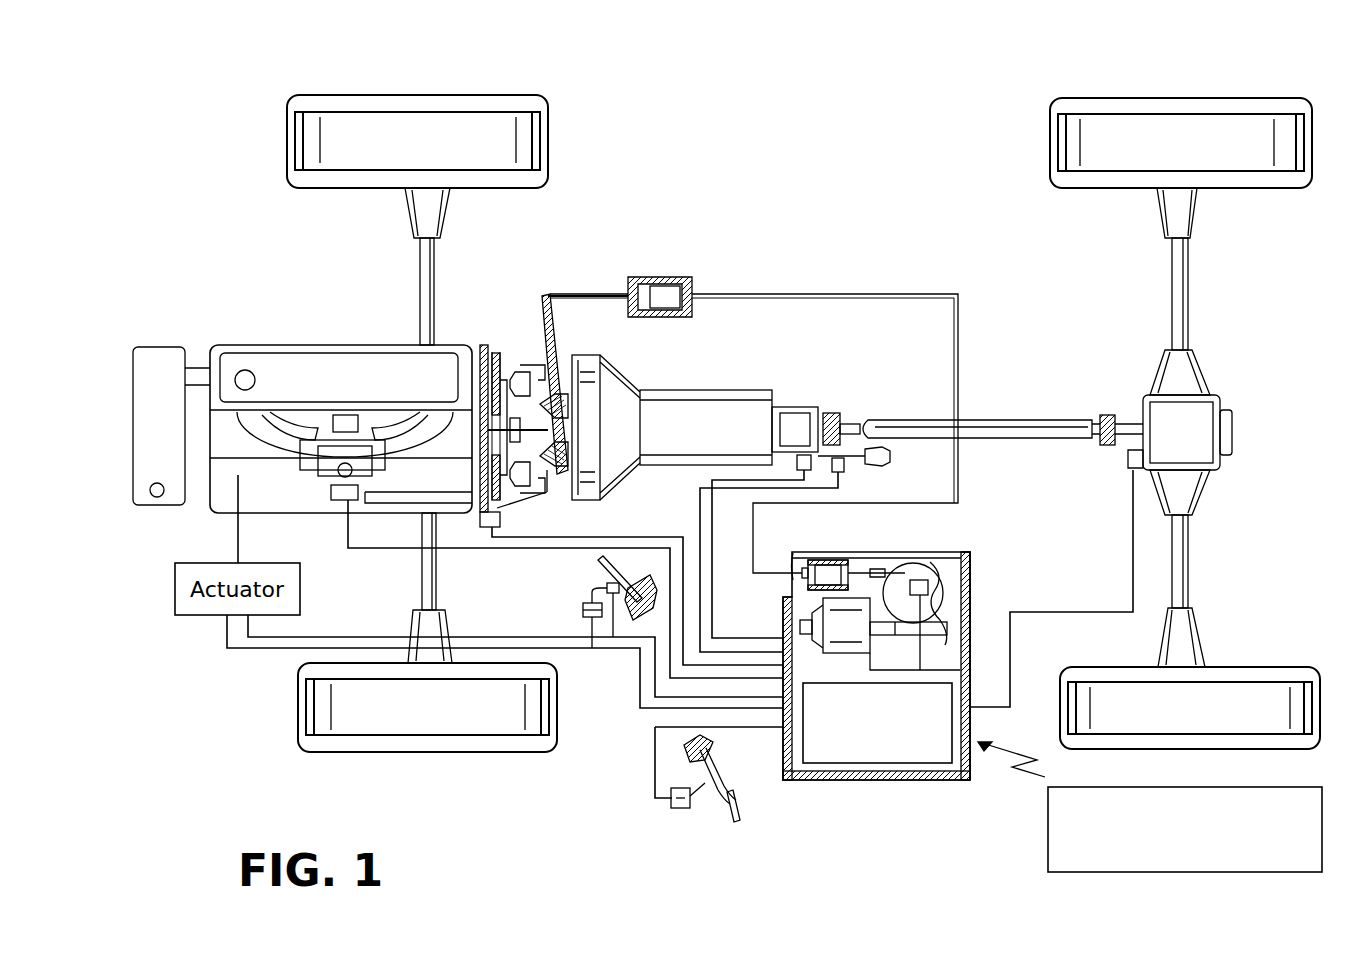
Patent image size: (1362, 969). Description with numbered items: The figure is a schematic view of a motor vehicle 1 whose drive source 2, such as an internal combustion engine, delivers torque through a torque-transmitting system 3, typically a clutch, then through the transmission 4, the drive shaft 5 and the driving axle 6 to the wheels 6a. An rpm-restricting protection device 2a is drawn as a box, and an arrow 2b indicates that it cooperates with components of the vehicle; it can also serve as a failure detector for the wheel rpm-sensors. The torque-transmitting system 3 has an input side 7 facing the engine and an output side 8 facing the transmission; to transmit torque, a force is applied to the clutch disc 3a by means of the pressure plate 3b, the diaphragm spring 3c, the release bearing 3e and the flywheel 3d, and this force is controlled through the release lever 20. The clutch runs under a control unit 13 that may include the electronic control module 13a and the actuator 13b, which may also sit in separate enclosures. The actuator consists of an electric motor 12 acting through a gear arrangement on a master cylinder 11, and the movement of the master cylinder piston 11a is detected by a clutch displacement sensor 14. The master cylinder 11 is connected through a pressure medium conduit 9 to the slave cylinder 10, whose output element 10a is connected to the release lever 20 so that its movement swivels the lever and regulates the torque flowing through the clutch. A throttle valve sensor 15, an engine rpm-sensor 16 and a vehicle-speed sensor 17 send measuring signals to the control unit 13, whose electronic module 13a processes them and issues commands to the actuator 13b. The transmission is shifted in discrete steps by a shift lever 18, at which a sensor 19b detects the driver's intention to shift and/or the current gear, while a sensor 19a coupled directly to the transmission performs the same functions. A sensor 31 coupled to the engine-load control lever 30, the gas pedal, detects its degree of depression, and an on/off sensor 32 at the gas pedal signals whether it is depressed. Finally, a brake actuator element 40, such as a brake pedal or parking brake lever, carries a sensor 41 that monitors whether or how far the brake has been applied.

The motor vehicle 1 is at (790, 228).
The drive source 2 is at (240, 355).
The rpm-restricting protection device 2a is at (1322, 832).
The arrow 2b is at (1020, 775).
The torque-transmitting system 3 is at (483, 300).
The clutch disc 3a is at (532, 492).
The pressure plate 3b is at (528, 365).
The diaphragm spring 3c is at (553, 395).
The flywheel 3d is at (505, 478).
The release bearing 3e is at (560, 434).
The transmission 4 is at (736, 390).
The drive shaft 5 is at (1018, 420).
The driving axle 6 is at (1190, 575).
The wheels 6a is at (1107, 188).
The input side 7 is at (478, 348).
The output side 8 is at (582, 356).
The pressure medium conduit 9 is at (858, 293).
The slave cylinder 10 is at (660, 278).
The output element 10a is at (580, 292).
The master cylinder 11 is at (806, 560).
The master cylinder piston 11a is at (834, 562).
The electric motor 12 is at (848, 637).
The control unit 13 is at (783, 752).
The electronic control module 13a is at (850, 765).
The actuator 13b is at (955, 541).
The clutch displacement sensor 14 is at (918, 580).
The throttle valve sensor 15 is at (345, 500).
The engine rpm-sensor 16 is at (482, 520).
The vehicle-speed sensor 17 is at (1128, 454).
The shift lever 18 is at (892, 456).
The sensor 19a is at (800, 455).
The sensor 19b is at (846, 470).
The release lever 20 is at (546, 292).
The engine-load control lever 30 is at (618, 586).
The sensor 31 is at (582, 612).
The on/off sensor 32 is at (605, 585).
The brake actuator element 40 is at (735, 815).
The sensor 41 is at (672, 806).